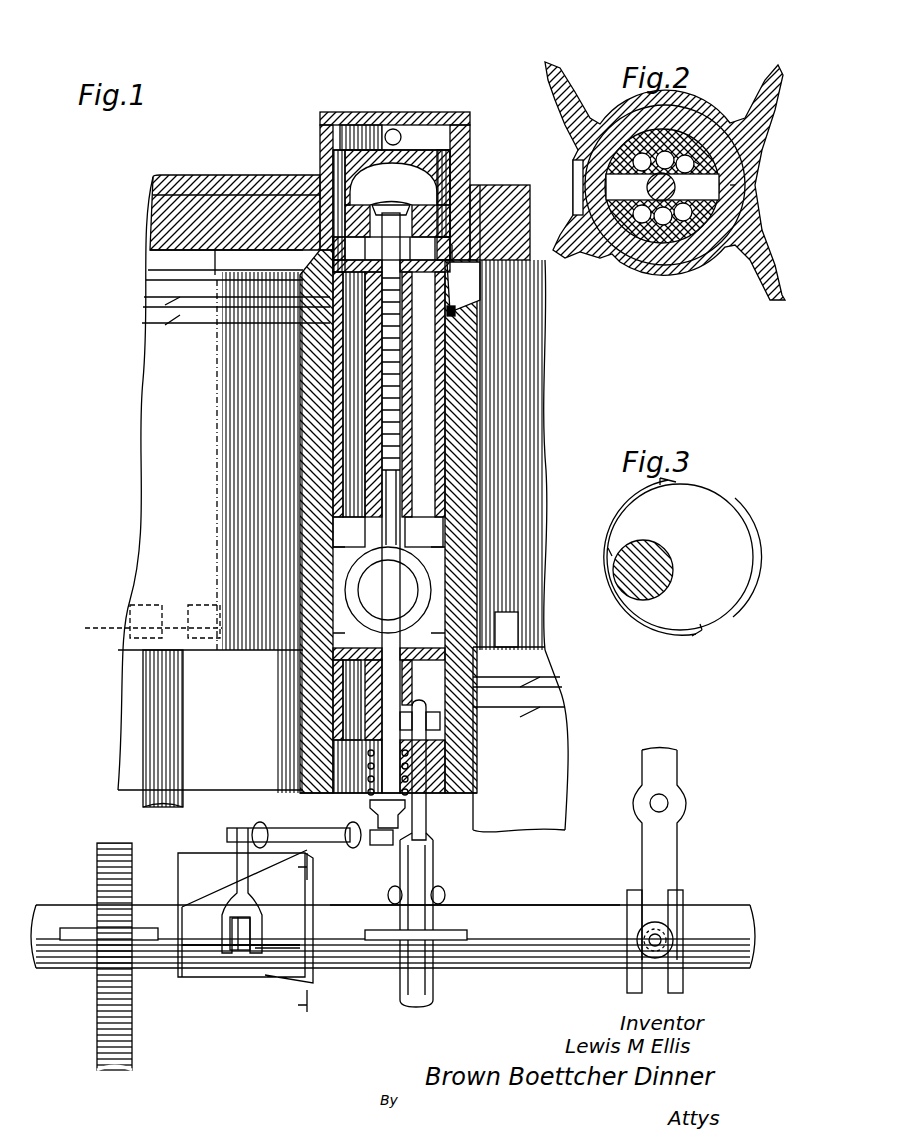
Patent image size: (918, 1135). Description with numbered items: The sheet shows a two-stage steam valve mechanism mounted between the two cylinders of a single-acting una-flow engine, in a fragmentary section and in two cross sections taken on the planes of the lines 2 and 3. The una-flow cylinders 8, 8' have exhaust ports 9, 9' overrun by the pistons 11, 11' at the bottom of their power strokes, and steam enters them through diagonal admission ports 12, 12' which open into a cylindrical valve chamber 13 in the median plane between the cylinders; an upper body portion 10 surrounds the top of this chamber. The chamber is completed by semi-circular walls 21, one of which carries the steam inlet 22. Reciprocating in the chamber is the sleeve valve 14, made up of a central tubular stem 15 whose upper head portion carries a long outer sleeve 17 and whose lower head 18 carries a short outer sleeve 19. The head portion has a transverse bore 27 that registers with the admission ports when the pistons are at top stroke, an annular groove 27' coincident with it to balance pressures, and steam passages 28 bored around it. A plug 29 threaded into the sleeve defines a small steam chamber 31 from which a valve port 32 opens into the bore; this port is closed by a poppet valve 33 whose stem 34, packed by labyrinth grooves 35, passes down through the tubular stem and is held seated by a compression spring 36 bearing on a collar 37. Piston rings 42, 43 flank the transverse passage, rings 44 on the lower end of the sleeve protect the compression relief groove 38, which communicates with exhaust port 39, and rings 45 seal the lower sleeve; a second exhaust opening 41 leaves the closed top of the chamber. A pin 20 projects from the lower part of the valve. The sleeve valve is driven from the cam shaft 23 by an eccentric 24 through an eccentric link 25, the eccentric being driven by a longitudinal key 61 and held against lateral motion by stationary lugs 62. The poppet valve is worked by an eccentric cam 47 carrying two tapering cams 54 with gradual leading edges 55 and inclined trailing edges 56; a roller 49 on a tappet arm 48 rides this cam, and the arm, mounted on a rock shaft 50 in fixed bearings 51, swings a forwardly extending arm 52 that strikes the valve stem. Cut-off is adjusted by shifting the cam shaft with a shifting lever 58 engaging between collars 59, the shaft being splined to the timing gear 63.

In FIG. 1, the section line 2 is at (331, 266).
In FIG. 1, the section line 3 is at (316, 938).
In FIG. 1, the una-flow cylinder 8 is at (190, 728).
In FIG. 1, the una-flow cylinder 8' is at (527, 455).
In FIG. 1, the exhaust port 9 is at (146, 621).
In FIG. 1, the exhaust port 9' is at (540, 629).
In FIG. 1, the head flange 10 is at (285, 258).
In FIG. 1, the piston 11 is at (206, 483).
In FIG. 1, the piston 11' is at (542, 739).
In FIG. 1, the admission port 12 is at (300, 521).
In FIG. 2, the admission port 12 is at (561, 187).
In FIG. 1, the admission port 12' is at (513, 287).
In FIG. 1, the valve chamber 13 is at (455, 135).
In FIG. 1, the sleeve valve 14 is at (365, 497).
In FIG. 1, the tubular stem 15 is at (270, 525).
In FIG. 1, the outer sleeve 17 is at (458, 313).
In FIG. 1, the head 18 is at (335, 663).
In FIG. 1, the outer sleeve 19 is at (335, 712).
In FIG. 1, the plunger pin 20 is at (420, 720).
In FIG. 1, the semi-circular wall 21 is at (345, 562).
In FIG. 2, the semi-circular wall 21 is at (640, 222).
In FIG. 1, the steam inlet 22 is at (360, 585).
In FIG. 1, the cam shaft 23 is at (525, 915).
In FIG. 3, the cam shaft 23 is at (650, 574).
In FIG. 1, the eccentric 24 is at (438, 905).
In FIG. 1, the eccentric link 25 is at (420, 858).
In FIG. 1, the transverse bore 27 is at (391, 248).
In FIG. 2, the transverse bore 27 is at (742, 199).
In FIG. 1, the annular groove 27' is at (431, 248).
In FIG. 2, the annular groove 27' is at (720, 153).
In FIG. 2, the steam passages 28 is at (682, 221).
In FIG. 1, the plug 29 is at (352, 156).
In FIG. 1, the steam chamber 31 is at (440, 165).
In FIG. 1, the valve port 32 is at (404, 206).
In FIG. 1, the poppet valve 33 is at (388, 203).
In FIG. 1, the valve stem 34 is at (392, 493).
In FIG. 2, the valve stem 34 is at (647, 188).
In FIG. 1, the grooves 35 is at (404, 365).
In FIG. 1, the compression spring 36 is at (405, 796).
In FIG. 1, the collar 37 is at (400, 828).
In FIG. 1, the annular groove 38 is at (447, 390).
In FIG. 1, the exhaust port 39 is at (400, 416).
In FIG. 1, the exhaust opening 41 is at (393, 129).
In FIG. 1, the piston rings 42 is at (340, 178).
In FIG. 1, the piston rings 43 is at (335, 330).
In FIG. 1, the rings 44 is at (338, 463).
In FIG. 1, the rings 45 is at (343, 700).
In FIG. 1, the eccentric cam 47 is at (268, 985).
In FIG. 3, the eccentric cam 47 is at (680, 557).
In FIG. 1, the tappet arm 48 is at (240, 868).
In FIG. 1, the roller 49 is at (240, 950).
In FIG. 1, the rock shaft 50 is at (318, 840).
In FIG. 3, the rock shaft 50 is at (676, 482).
In FIG. 1, the fixed bearings 51 is at (262, 822).
In FIG. 1, the arm 52 is at (380, 845).
In FIG. 1, the tapering cams 54 is at (241, 938).
In FIG. 3, the tapering cams 54 is at (608, 548).
In FIG. 1, the leading edges 55 is at (290, 950).
In FIG. 3, the leading edges 55 is at (745, 505).
In FIG. 1, the trailing edges 56 is at (210, 905).
In FIG. 1, the shifting lever 58 is at (668, 845).
In FIG. 1, the collars 59 is at (640, 897).
In FIG. 1, the longitudinal key 61 is at (455, 942).
In FIG. 1, the stationary lugs 62 is at (402, 890).
In FIG. 1, the timing gear 63 is at (98, 868).